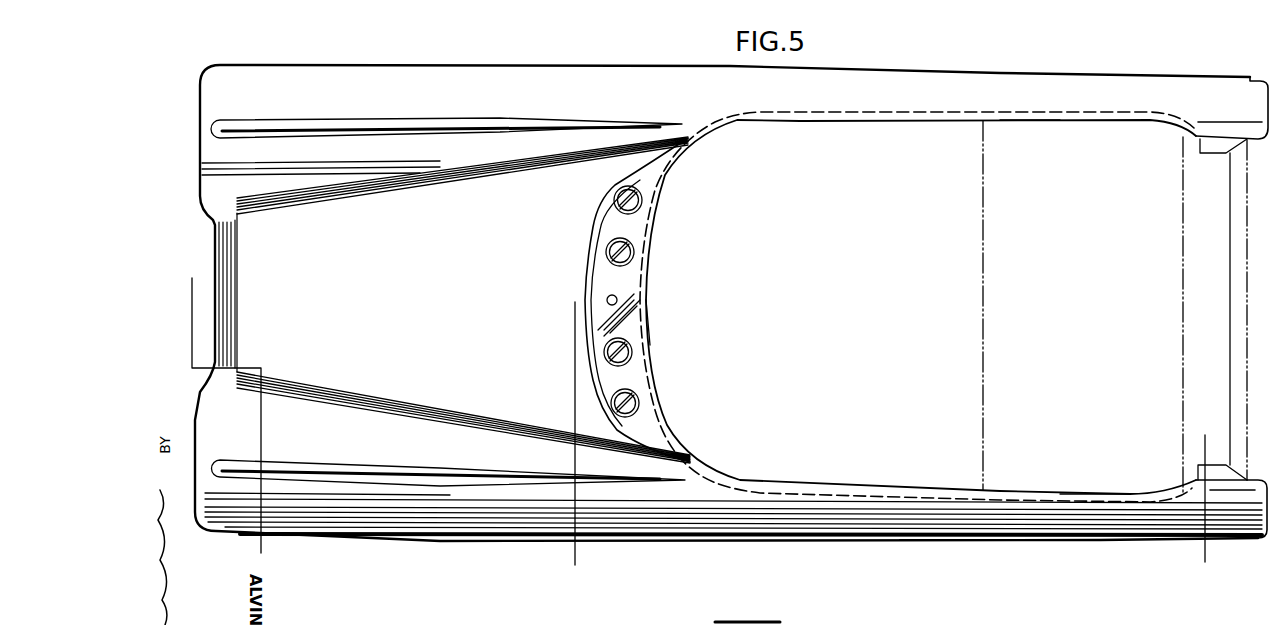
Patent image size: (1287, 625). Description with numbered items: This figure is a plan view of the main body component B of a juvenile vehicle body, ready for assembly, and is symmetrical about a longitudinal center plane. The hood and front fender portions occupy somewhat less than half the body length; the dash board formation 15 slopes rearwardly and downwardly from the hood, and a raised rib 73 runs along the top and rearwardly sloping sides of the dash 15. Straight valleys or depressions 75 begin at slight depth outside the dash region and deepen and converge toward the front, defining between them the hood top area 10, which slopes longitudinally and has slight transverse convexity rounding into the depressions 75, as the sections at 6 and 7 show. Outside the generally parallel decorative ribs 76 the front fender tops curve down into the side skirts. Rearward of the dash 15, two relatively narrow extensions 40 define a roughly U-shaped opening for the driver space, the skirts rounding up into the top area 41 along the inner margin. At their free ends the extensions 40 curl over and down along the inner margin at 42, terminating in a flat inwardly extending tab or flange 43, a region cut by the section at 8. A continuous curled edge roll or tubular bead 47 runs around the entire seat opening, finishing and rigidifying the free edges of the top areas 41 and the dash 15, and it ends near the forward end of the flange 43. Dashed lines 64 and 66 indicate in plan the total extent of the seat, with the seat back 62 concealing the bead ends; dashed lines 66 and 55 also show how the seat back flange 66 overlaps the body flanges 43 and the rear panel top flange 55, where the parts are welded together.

The hood top area 10 is at (446, 279).
The dash board formation 15 is at (627, 280).
The rearward extensions 40 is at (921, 128).
The top area 41 is at (961, 102).
The curled over portion 42 is at (1257, 128).
The tab or flange 43 is at (1247, 140).
The edge roll or tubular bead 47 is at (1035, 117).
The rear panel member top flange 55 is at (1230, 294).
The seat back 62 is at (1183, 247).
The dashed line indicating seat extent 64 is at (983, 263).
The seat back flange 66 is at (1247, 273).
The raised rib 73 is at (588, 264).
The depressions 75 is at (447, 180).
The decorative ribs 76 is at (405, 122).
The main body component B is at (1002, 544).
The section line 6- 6 is at (192, 278).
The section line 7- 7 is at (575, 302).
The section line 8- 8 is at (1172, 435).